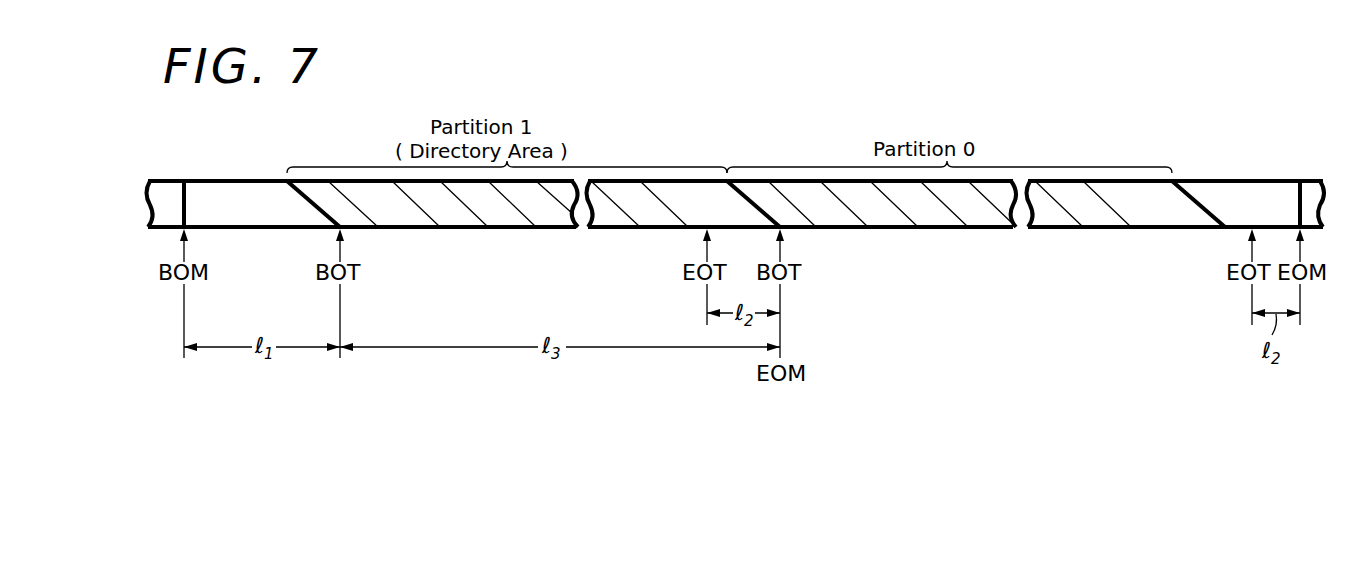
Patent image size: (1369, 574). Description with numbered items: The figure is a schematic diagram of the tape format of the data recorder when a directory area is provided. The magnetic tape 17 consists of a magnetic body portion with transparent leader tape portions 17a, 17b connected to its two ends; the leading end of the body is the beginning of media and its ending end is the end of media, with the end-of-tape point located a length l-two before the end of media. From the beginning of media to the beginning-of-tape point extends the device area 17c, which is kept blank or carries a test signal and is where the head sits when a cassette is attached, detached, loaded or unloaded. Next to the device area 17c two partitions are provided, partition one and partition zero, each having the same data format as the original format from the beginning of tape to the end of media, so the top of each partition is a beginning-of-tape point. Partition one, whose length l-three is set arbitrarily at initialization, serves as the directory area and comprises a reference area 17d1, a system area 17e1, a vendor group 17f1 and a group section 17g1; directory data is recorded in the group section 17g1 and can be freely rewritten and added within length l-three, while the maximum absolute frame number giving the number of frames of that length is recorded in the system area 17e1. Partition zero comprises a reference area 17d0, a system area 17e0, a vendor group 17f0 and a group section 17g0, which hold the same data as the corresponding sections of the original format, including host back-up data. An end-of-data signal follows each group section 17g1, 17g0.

The magnetic tape 17 is at (1208, 172).
The leader tape portion 17a is at (168, 190).
The leader tape portion 17b is at (1310, 190).
The device area 17c is at (253, 218).
The reference area of PARTITION 1 17d1 is at (357, 218).
The system area of PARTITION 1 17e1 is at (407, 218).
The vendor group of PARTITION 1 17f1 is at (470, 218).
The group section of PARTITION 1 17g1 is at (688, 235).
The reference area of PARTITION 0 17d0 is at (793, 218).
The system area of PARTITION 0 17e0 is at (850, 218).
The vendor group of PARTITION 0 17f0 is at (905, 218).
The group section of PARTITION 0 17g0 is at (1128, 235).